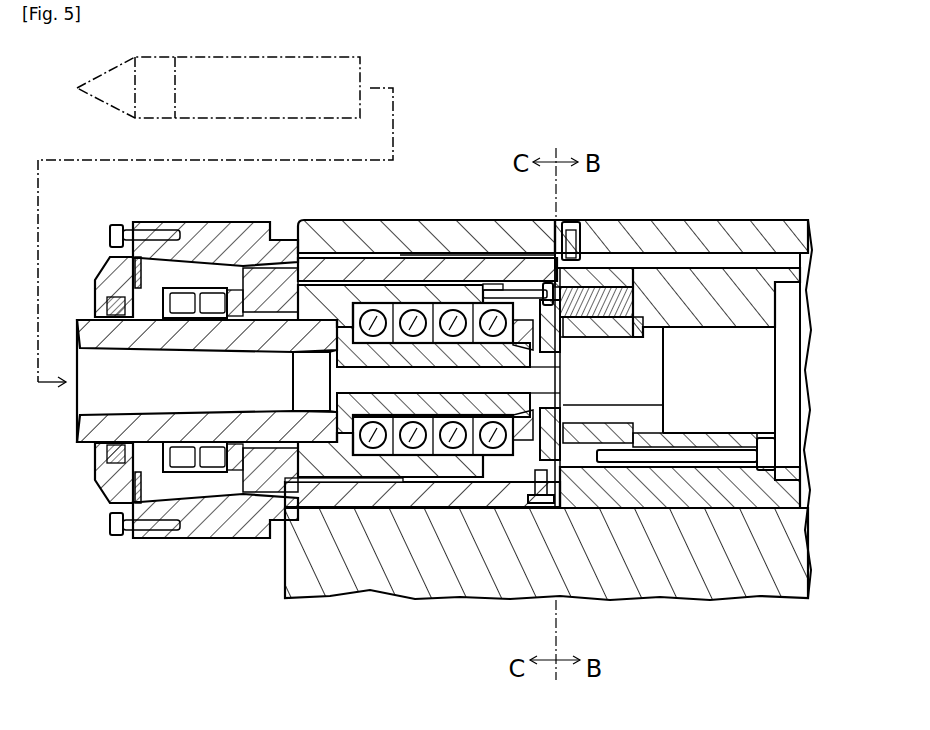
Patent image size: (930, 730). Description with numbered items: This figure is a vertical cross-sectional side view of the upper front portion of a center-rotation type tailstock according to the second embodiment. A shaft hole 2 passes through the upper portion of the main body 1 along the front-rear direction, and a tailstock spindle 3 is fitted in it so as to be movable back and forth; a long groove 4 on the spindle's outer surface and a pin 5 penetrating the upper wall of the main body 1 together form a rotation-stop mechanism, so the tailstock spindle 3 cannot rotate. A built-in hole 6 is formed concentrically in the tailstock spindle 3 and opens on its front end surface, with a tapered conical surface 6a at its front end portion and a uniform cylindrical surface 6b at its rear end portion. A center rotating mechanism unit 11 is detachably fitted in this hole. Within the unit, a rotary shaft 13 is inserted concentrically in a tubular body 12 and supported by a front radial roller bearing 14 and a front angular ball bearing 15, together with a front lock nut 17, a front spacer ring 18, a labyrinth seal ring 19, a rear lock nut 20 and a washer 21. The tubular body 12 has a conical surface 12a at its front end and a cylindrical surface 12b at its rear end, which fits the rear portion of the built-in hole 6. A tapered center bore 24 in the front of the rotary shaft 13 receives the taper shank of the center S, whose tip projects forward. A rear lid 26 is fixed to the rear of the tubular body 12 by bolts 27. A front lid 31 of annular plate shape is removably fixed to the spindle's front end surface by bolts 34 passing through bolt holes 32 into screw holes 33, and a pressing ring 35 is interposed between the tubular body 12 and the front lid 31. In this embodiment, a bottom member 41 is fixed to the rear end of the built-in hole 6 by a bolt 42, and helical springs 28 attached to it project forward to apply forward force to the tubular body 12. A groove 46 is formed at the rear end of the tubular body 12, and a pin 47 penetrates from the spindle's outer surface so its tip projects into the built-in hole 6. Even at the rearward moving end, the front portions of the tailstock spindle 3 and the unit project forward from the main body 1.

The main body 1 is at (769, 220).
The shaft hole 2 is at (443, 268).
The tailstock spindle 3 is at (413, 245).
The long groove 4 is at (608, 262).
The pin 5 is at (573, 222).
The built-in hole 6 is at (262, 300).
The conical surface 6a is at (286, 567).
The cylindrical surface 6b is at (473, 207).
The center rotating mechanism unit 11 is at (667, 304).
The tubular body 12 is at (299, 300).
The conical surface 12a is at (188, 500).
The cylindrical surface 12b is at (467, 290).
The rotary shaft 13 is at (340, 300).
The front radial roller bearing 14 is at (205, 240).
The front angular ball bearing 15 is at (378, 303).
The front lock nut 17 is at (104, 457).
The front spacer ring 18 is at (130, 463).
The labyrinth seal ring 19 is at (133, 480).
The rear lock nut 20 is at (585, 470).
The washer 21 is at (517, 442).
The center bore 24 is at (76, 402).
The rear lid 26 is at (663, 445).
The bolt 27 is at (543, 284).
The helical spring 28 is at (624, 292).
The front lid 31 is at (95, 278).
The bolt hole 32 is at (130, 538).
The screw hole 33 is at (155, 540).
The bolt 34 is at (112, 224).
The pressing ring 35 is at (138, 257).
The bottom member 41 is at (716, 257).
The bolt 42 is at (745, 458).
The groove 46 is at (556, 470).
The pin 47 is at (537, 495).
The center S is at (360, 63).